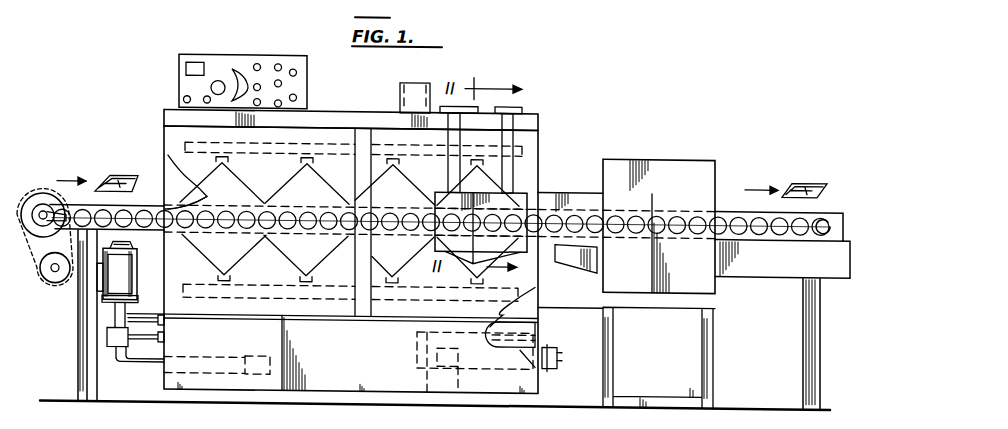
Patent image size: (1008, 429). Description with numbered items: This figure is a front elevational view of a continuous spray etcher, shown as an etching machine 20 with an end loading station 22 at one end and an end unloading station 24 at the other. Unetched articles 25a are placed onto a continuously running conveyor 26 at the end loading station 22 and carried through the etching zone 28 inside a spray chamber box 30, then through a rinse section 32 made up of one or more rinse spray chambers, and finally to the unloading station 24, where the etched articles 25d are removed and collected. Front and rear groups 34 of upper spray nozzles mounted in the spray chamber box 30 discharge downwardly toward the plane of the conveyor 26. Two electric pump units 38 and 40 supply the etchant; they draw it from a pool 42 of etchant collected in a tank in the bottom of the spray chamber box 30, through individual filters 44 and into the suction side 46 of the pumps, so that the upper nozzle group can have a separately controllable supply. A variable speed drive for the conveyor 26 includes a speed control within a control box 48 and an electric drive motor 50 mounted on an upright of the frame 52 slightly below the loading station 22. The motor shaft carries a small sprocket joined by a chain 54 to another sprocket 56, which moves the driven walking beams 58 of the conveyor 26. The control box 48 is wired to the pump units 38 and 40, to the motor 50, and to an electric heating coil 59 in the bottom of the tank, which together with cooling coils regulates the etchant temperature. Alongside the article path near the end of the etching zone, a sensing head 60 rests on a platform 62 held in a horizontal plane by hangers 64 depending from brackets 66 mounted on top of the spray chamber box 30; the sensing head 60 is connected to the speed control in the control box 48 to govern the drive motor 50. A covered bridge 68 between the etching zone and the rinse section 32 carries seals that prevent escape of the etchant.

The etching machine 20 is at (560, 149).
The end loading station 22 is at (137, 198).
The end unloading station 24 is at (828, 200).
The unetched articles 25a is at (112, 173).
The etched articles 25d is at (798, 172).
The conveyor 26 is at (92, 212).
The etching zone 28 is at (168, 155).
The spray chamber box 30 is at (173, 133).
The rinse section 32 is at (680, 160).
The upper spray nozzles 34 is at (327, 146).
The electric pump unit 38 is at (108, 283).
The electric pump unit 40 is at (118, 270).
The pool of etchant 42 is at (535, 330).
The filters 44 is at (250, 372).
The suction side 46 is at (118, 360).
The control box 48 is at (244, 58).
The electric drive motor 50 is at (47, 280).
The frame 52 is at (82, 400).
The chain 54 is at (44, 180).
The sprocket 56 is at (50, 198).
The driven walking beams 58 is at (128, 220).
The electric heating coil 59 is at (556, 345).
The sensing head 60 is at (527, 187).
The platform 62 is at (518, 255).
The hangers 64 is at (448, 131).
The brackets 66 is at (470, 108).
The covered bridge 68 is at (575, 208).